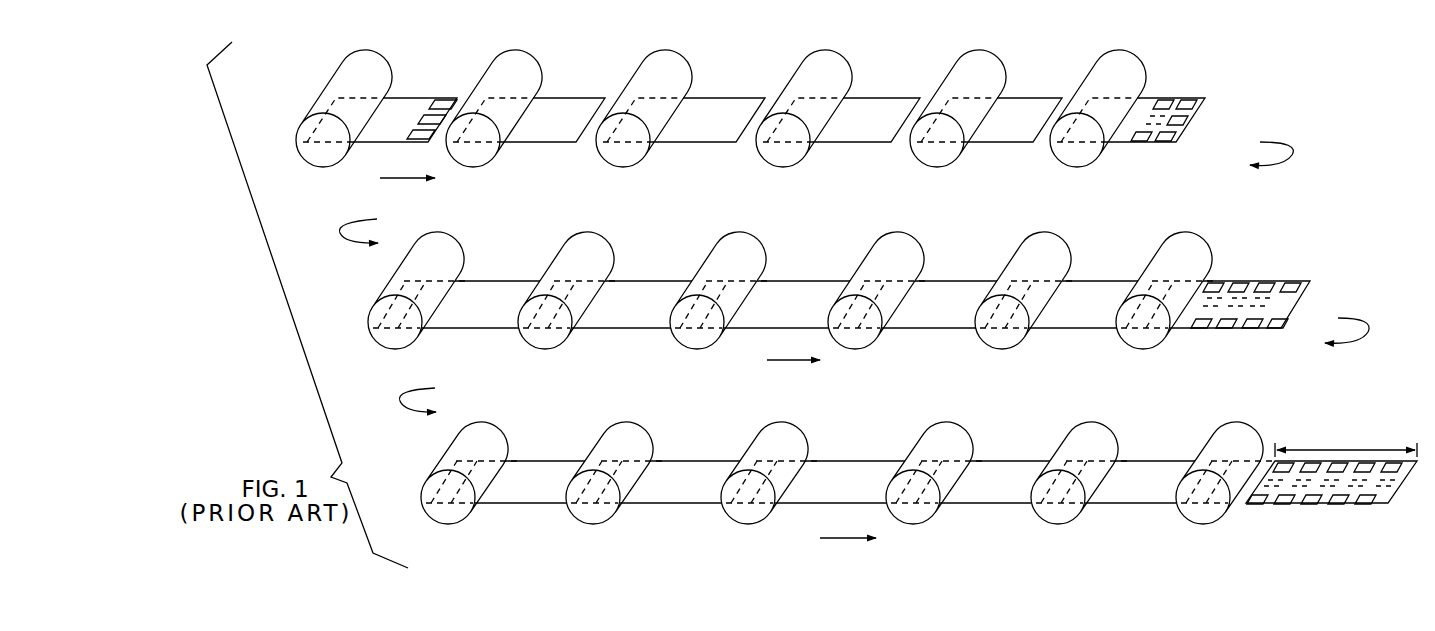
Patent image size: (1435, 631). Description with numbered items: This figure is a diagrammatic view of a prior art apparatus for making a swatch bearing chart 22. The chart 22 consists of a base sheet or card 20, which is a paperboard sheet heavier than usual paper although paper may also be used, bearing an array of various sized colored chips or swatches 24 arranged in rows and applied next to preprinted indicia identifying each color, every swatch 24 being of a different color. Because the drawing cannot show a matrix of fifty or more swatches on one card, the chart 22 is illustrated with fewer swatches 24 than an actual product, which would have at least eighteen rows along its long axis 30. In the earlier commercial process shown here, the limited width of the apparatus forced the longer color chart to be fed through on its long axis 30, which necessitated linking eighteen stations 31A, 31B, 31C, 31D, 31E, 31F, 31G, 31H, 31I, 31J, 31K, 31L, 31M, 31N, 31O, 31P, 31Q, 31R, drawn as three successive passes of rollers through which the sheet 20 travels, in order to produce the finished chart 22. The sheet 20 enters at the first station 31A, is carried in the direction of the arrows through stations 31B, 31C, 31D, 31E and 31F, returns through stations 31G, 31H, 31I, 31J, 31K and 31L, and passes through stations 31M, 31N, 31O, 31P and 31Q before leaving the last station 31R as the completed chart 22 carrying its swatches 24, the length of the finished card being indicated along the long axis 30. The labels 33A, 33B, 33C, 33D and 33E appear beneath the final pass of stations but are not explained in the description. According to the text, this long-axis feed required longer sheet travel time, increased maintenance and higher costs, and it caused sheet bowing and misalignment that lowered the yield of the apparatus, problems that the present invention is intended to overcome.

The base sheet 20 is at (401, 108).
The swatch bearing chart 22 is at (1313, 511).
The swatches 24 is at (1268, 287).
The long axis 30 is at (1328, 447).
The station 31A is at (322, 171).
The station 31B is at (500, 163).
The station 31C is at (650, 163).
The station 31D is at (810, 163).
The station 31E is at (964, 163).
The station 31F is at (1104, 163).
The station 31G is at (397, 355).
The station 31H is at (566, 352).
The station 31I is at (718, 352).
The station 31J is at (876, 352).
The station 31K is at (1023, 352).
The station 31L is at (1164, 352).
The station 31M is at (474, 521).
The station 31N is at (619, 521).
The station 31O is at (773, 521).
The station 31P is at (942, 521).
The station 31Q is at (1081, 525).
The station 31R is at (1229, 526).
The processing station 33A is at (454, 627).
The processing station 33B is at (587, 627).
The processing station 33C is at (699, 627).
The processing station 33D is at (837, 627).
The processing station 33E is at (960, 627).